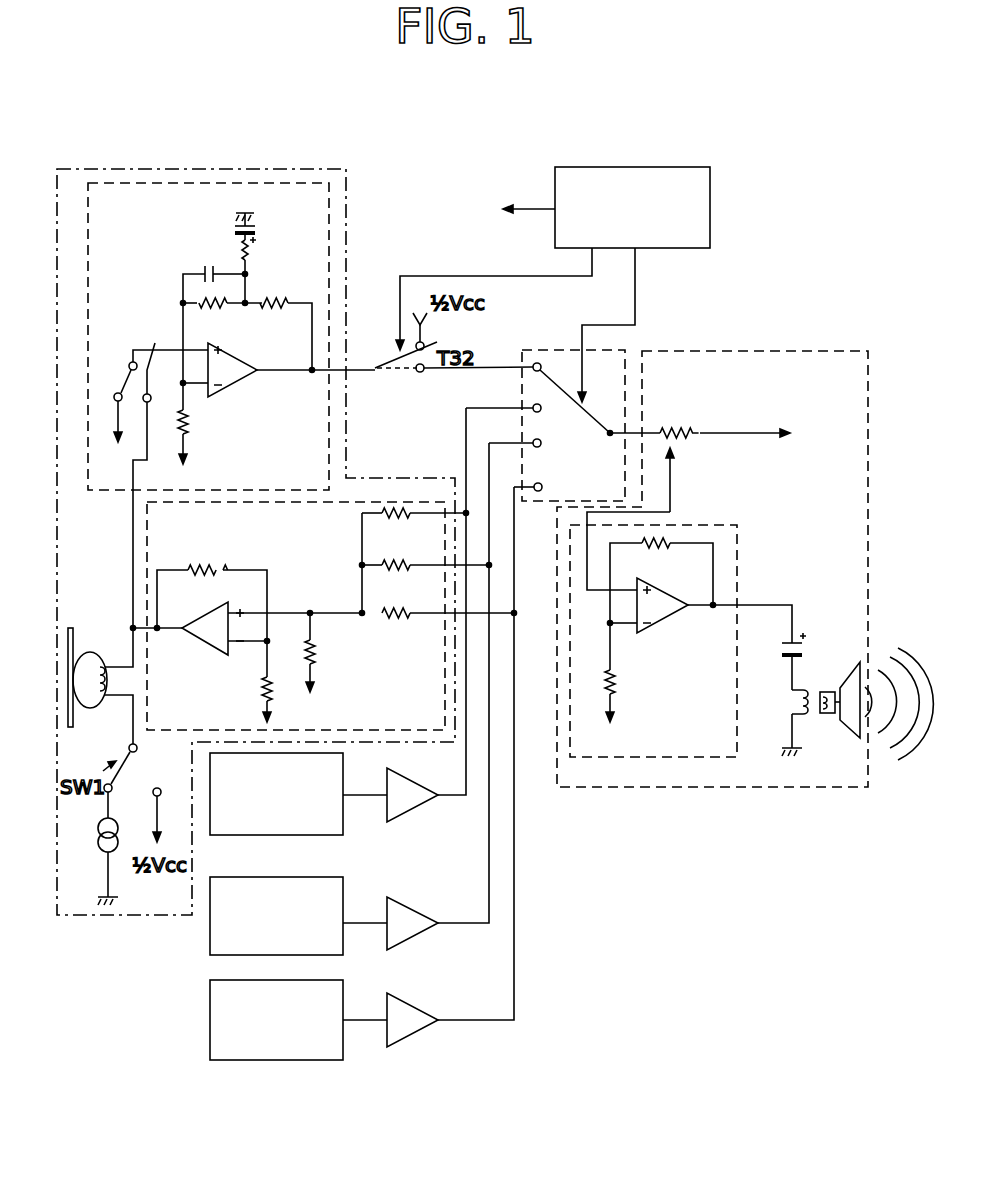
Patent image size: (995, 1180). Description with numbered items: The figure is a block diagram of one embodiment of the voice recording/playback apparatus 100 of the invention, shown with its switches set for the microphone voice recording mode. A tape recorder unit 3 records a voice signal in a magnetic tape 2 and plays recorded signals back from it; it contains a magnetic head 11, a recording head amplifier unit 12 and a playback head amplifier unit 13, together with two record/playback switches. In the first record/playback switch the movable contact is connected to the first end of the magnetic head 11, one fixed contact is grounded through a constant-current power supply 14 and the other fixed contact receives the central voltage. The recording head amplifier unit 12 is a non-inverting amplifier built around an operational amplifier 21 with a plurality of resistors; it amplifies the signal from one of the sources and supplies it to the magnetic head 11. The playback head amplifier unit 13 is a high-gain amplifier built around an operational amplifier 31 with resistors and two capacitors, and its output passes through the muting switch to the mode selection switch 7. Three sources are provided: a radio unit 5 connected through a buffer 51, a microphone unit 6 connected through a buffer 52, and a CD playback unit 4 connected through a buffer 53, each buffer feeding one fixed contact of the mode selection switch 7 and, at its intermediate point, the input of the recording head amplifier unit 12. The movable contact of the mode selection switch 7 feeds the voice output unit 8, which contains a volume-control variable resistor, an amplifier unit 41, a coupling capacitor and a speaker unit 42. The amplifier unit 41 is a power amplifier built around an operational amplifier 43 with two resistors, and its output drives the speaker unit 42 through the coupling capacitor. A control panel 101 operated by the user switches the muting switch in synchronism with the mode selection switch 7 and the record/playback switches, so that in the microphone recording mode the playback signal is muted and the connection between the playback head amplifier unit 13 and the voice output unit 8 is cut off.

The voice recording/playback apparatus 100 is at (107, 136).
The tape recorder unit 3 is at (348, 182).
The playback head amplifier unit 13 is at (353, 262).
The recording head amplifier unit 12 is at (352, 483).
The mode selection switch 7 is at (530, 350).
The voice output unit 8 is at (662, 348).
The control panel 101 is at (710, 186).
The magnetic tape 2 is at (100, 672).
The magnetic head 11 is at (93, 708).
The constant-current power supply 14 is at (120, 845).
The radio unit 5 is at (282, 837).
The microphone unit 6 is at (210, 922).
The CD playback unit 4 is at (210, 1036).
The operational amplifier 21 is at (200, 642).
The operational amplifier 31 is at (240, 388).
The operational amplifier 43 is at (660, 625).
The amplifier unit 41 is at (737, 595).
The speaker unit 42 is at (845, 735).
The buffer 51 is at (407, 808).
The buffer 52 is at (418, 938).
The buffer 53 is at (423, 1030).